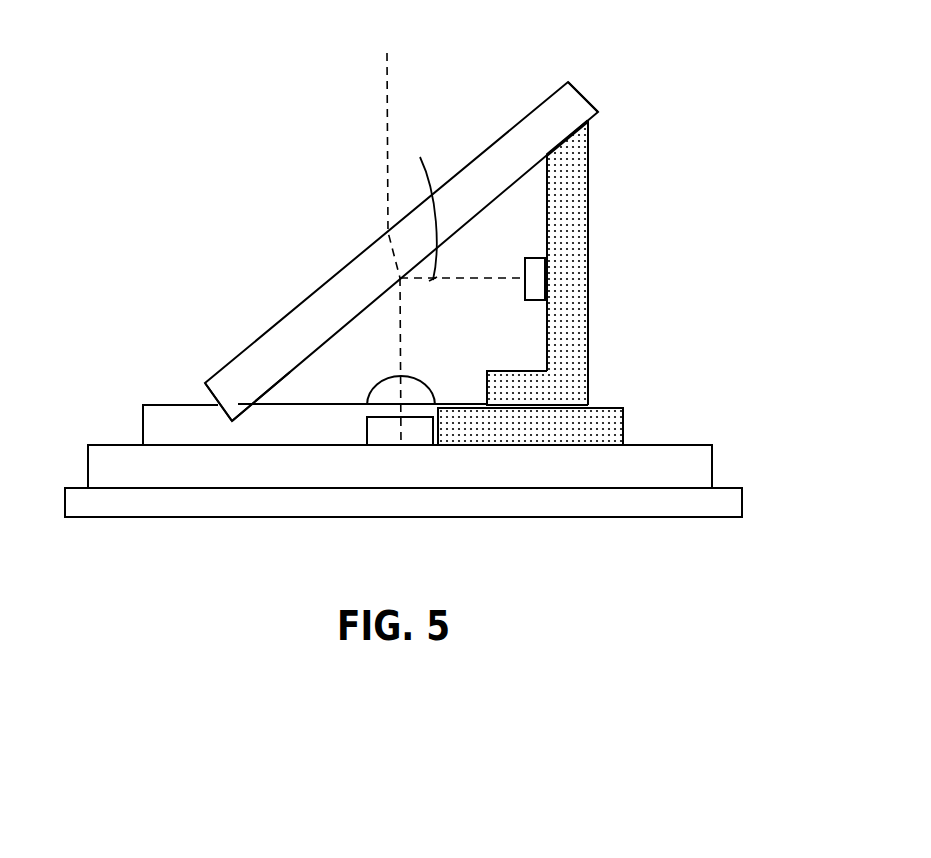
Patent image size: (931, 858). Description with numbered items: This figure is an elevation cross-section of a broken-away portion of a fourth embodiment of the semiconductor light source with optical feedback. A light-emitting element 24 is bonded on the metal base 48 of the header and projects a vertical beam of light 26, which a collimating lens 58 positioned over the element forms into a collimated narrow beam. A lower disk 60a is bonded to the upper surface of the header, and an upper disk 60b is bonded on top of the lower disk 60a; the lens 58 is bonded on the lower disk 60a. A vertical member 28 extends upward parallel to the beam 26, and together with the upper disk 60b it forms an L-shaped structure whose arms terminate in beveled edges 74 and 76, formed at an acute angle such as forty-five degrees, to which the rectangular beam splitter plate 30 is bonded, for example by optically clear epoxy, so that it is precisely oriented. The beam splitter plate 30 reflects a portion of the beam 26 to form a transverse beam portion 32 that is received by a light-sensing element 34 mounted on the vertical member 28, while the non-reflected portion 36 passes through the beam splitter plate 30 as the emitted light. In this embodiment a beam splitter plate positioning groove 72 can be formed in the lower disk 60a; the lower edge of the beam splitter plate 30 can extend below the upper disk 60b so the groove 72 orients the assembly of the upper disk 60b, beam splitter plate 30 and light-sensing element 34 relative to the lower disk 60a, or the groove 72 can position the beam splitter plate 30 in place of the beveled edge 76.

The light-emitting element 24 is at (403, 430).
The beam of light 26 is at (402, 347).
The vertical member 28 is at (577, 213).
The beam splitter plate 30 is at (378, 272).
The beam portion 32 is at (462, 202).
The light-sensing element 34 is at (530, 272).
The non-reflected portion of the beam 36 is at (387, 127).
The metal base 48 is at (687, 465).
The collimating lens 58 is at (408, 388).
The lower disk 60a is at (588, 427).
The upper disk 60b is at (560, 382).
The beam splitter plate positioning groove 72 is at (231, 412).
The beveled edge 74 is at (567, 140).
The beveled edge 76 is at (267, 390).